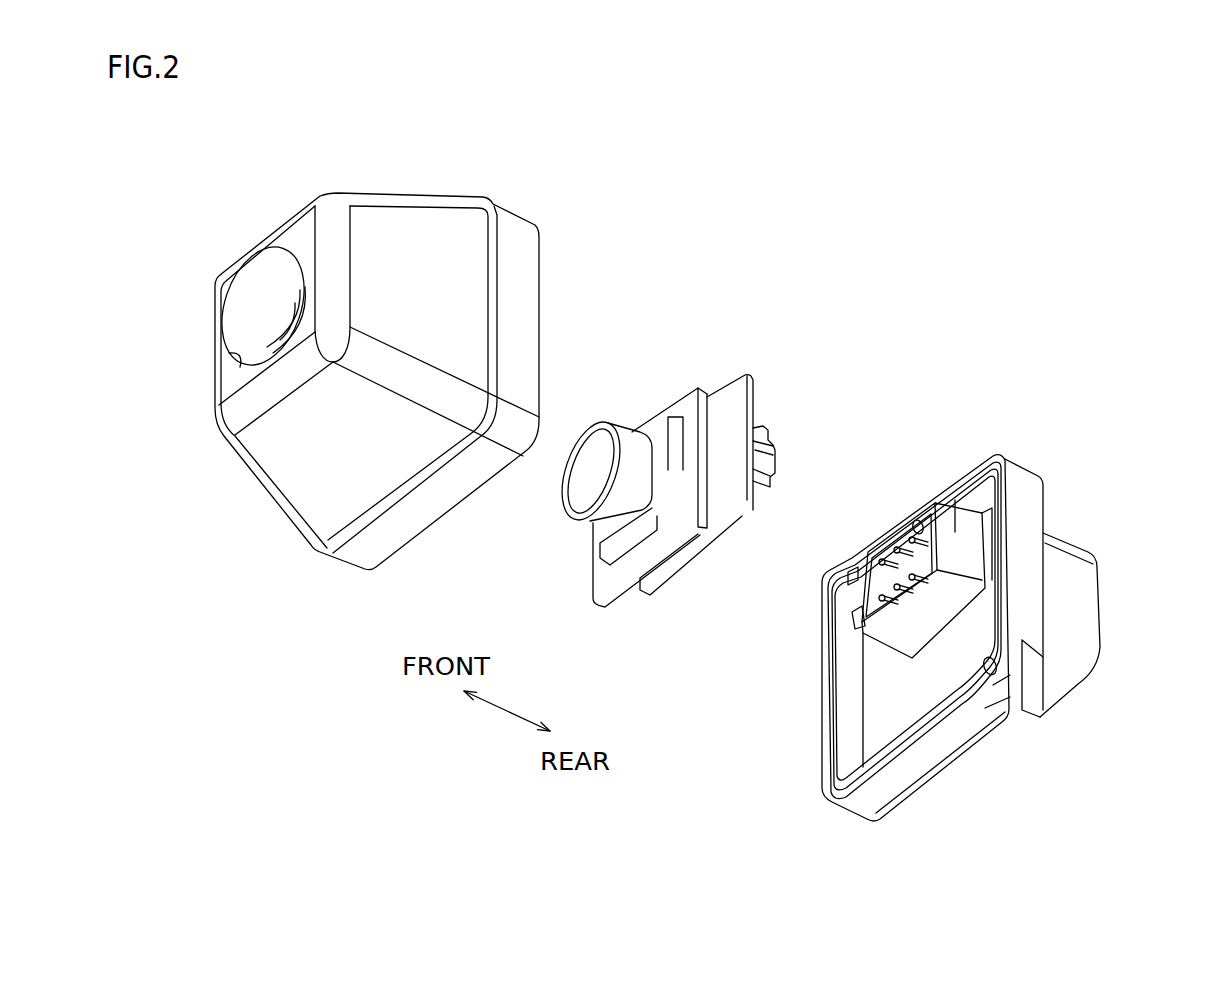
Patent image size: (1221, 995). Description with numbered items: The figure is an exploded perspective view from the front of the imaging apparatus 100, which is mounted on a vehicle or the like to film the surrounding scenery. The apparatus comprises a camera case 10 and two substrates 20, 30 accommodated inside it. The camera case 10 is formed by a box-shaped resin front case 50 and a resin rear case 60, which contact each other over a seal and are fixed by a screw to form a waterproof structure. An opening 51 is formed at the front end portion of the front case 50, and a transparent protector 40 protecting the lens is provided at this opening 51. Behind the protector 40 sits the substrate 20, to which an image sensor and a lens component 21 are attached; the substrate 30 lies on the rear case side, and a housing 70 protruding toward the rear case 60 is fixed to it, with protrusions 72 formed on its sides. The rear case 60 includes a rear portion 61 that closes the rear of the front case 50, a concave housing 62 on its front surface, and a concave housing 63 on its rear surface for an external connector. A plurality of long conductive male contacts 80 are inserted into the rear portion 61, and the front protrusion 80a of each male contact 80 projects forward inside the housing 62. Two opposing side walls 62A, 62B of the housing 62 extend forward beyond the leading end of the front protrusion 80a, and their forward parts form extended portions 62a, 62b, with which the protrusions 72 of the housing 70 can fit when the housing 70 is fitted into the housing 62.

The imaging apparatus 100 is at (831, 134).
The camera case 10 is at (992, 235).
The front case 50 is at (566, 265).
The rear case 60 is at (1016, 440).
The protector 40 is at (247, 307).
The opening 51 is at (225, 355).
The substrate 20 is at (683, 410).
The substrate 30 is at (730, 395).
The lens component 21 is at (607, 513).
The housing 70 is at (775, 437).
The protrusion 72 is at (766, 455).
The rear portion 61 is at (877, 730).
The housing 62 is at (898, 522).
The side wall 62A is at (948, 540).
The extended portion 62a is at (911, 520).
The side wall 62B is at (850, 580).
The extended portion 62b is at (840, 618).
The male contact 80 is at (870, 590).
The front protrusion 80a is at (880, 597).
The housing 63 is at (1087, 612).